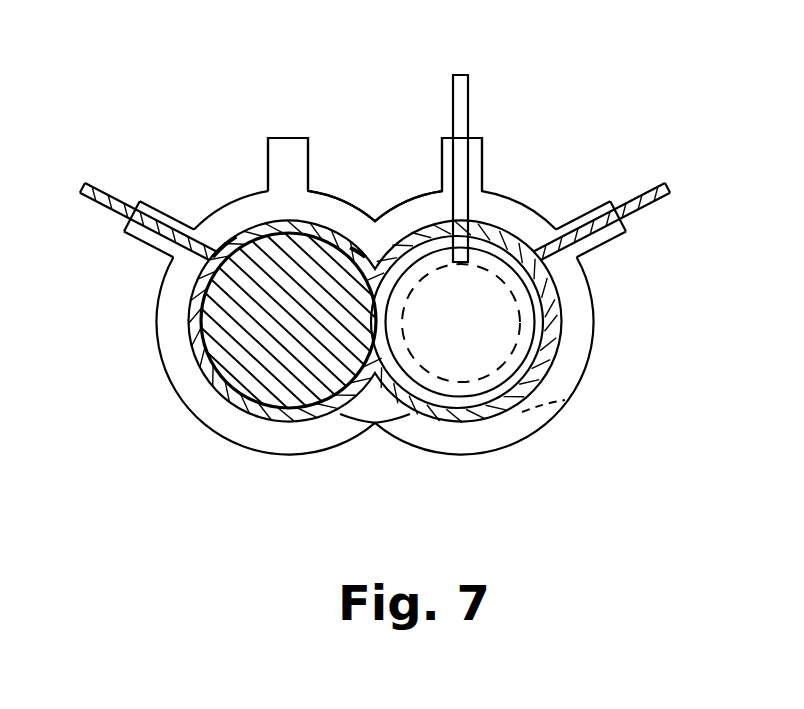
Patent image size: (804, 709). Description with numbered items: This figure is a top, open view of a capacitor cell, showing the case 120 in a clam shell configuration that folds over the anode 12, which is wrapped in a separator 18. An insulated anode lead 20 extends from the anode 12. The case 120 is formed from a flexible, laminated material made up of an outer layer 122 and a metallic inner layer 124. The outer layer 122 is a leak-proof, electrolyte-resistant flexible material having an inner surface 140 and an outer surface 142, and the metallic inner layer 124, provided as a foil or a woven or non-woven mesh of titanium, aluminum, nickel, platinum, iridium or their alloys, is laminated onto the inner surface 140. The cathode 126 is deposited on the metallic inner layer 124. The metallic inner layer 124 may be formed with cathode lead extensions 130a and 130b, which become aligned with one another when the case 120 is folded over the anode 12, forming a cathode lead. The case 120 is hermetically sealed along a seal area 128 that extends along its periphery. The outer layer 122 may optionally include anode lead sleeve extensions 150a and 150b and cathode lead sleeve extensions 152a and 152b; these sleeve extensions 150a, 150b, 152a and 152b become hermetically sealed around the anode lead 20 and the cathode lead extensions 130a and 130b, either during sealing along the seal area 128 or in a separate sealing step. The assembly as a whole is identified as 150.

The tube assembly 150 is at (400, 34).
The anode lead sleeve extension 150a is at (312, 163).
The anode lead sleeve extension 150b is at (482, 178).
The cathode lead sleeve extension 152a is at (163, 212).
The cathode lead sleeve extension 152b is at (568, 216).
The cathode lead extension 130a is at (93, 196).
The cathode lead extension 130b is at (663, 201).
The seal area 128 is at (217, 227).
The outer layer 122 is at (335, 213).
The case 120 is at (597, 357).
The metallic inner layer 124 is at (336, 402).
The cathode 126 is at (242, 345).
The anode 12 is at (447, 330).
The separator 18 is at (517, 372).
The anode lead 20 is at (466, 125).
The inner surface 140 is at (504, 432).
The outer surface 142 is at (565, 400).